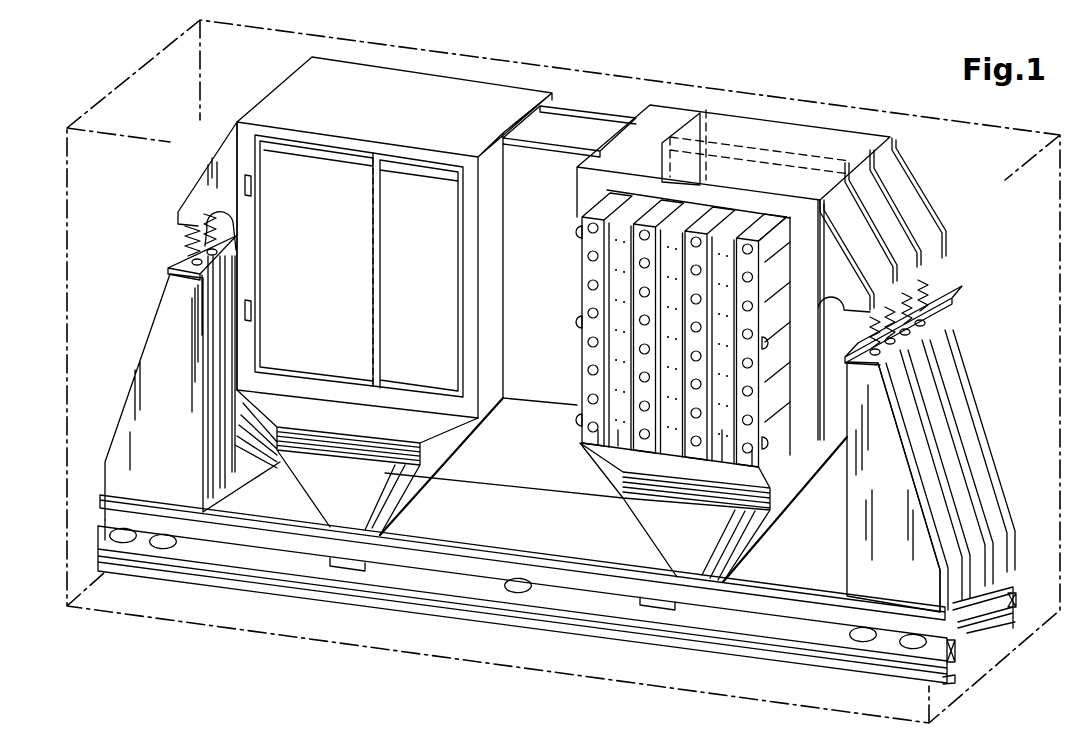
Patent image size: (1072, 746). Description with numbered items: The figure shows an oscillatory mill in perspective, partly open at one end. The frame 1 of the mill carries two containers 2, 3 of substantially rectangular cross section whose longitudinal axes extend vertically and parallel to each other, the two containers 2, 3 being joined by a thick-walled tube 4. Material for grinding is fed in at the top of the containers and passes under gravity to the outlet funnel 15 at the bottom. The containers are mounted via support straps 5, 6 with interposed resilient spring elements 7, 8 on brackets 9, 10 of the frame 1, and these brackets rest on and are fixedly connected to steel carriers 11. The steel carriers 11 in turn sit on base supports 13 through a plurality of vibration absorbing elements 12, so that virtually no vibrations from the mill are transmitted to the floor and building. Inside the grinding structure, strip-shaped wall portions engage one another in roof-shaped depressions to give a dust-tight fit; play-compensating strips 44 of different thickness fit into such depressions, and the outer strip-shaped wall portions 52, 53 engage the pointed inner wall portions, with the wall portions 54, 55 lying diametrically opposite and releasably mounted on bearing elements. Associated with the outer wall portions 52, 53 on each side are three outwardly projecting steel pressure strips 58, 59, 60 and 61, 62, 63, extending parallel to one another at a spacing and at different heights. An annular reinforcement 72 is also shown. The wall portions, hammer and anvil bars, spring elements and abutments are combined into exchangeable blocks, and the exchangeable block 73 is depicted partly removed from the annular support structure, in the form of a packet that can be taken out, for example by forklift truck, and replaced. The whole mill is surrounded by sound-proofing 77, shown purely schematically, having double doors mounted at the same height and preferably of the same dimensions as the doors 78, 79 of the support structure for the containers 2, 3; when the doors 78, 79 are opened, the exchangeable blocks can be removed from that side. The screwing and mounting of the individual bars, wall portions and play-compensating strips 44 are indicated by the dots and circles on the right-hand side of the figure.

The frame 1 is at (125, 415).
The container 2 is at (348, 95).
The container 3 is at (722, 120).
The thick-walled tube 4 is at (590, 112).
The support strap 5 is at (197, 192).
The support strap 6 is at (842, 273).
The resilient spring element 7 is at (188, 245).
The resilient spring element 8 is at (910, 295).
The bracket 9 is at (150, 458).
The bracket 10 is at (873, 423).
The steel carrier 11 is at (937, 635).
The vibration absorbing element 12 is at (121, 547).
The base support 13 is at (385, 595).
The outlet funnel 15 is at (362, 533).
The play-compensating strip 44 is at (598, 435).
The outer strip-shaped wall portion 52 is at (600, 448).
The outer strip-shaped wall portion 53 is at (752, 457).
The wall portion 54 is at (620, 437).
The wall portion 55 is at (722, 438).
The pressure strip 58 is at (775, 215).
The pressure strip 59 is at (762, 340).
The pressure strip 60 is at (765, 443).
The pressure strip 61 is at (576, 420).
The pressure strip 62 is at (578, 322).
The pressure strip 63 is at (578, 232).
The annular reinforcement 72 is at (732, 145).
The exchangeable block 73 is at (880, 373).
The sound-proofing 77 is at (78, 122).
The door 78 is at (337, 185).
The door 79 is at (400, 187).